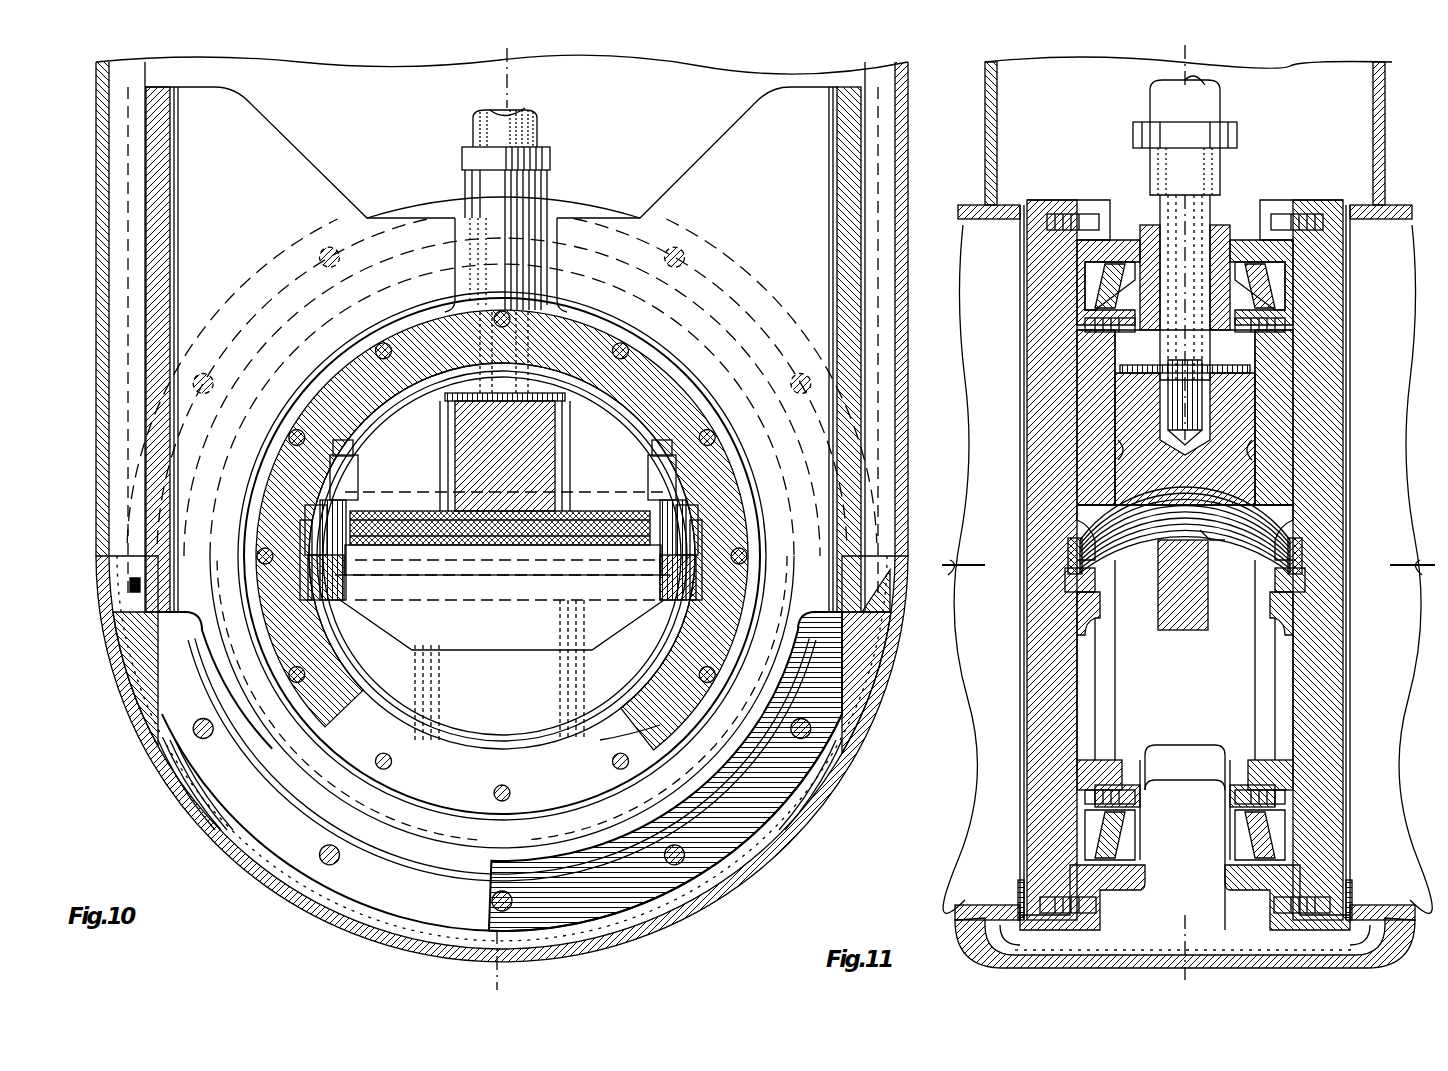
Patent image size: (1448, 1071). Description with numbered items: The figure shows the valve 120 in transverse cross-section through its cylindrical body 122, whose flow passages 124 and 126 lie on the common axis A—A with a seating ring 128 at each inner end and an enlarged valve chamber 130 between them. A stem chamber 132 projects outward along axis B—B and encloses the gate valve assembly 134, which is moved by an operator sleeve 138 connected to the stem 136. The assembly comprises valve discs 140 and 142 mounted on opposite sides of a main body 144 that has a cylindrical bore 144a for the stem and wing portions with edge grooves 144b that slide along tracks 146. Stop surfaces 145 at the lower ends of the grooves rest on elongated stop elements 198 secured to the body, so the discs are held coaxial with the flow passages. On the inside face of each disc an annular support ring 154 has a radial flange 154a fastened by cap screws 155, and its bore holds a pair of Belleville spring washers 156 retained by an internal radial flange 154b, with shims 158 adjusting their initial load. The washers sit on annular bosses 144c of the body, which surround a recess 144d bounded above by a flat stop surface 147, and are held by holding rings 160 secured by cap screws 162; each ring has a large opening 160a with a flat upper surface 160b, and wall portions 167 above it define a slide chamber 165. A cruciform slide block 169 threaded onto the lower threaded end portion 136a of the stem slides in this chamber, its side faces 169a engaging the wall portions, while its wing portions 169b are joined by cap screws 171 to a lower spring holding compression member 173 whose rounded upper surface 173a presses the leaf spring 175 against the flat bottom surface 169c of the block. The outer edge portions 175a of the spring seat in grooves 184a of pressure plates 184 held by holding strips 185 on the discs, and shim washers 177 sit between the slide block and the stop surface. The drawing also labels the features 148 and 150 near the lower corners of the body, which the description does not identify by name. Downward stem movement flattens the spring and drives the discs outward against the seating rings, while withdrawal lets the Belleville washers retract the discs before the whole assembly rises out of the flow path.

In FIG. 10, the valve 120 is at (218, 970).
In FIG. 11, the valve 120 is at (1432, 92).
In FIG. 10, the cylindrical body 122 is at (612, 942).
In FIG. 11, the cylindrical body 122 is at (1330, 965).
In FIG. 11, the flow passage 124 is at (975, 912).
In FIG. 11, the flow passage 126 is at (1370, 912).
In FIG. 11, the seating ring 128 is at (1000, 205).
In FIG. 10, the valve chamber 130 is at (432, 935).
In FIG. 11, the valve chamber 130 is at (1198, 940).
In FIG. 10, the stem chamber 132 is at (908, 75).
In FIG. 11, the stem chamber 132 is at (1372, 128).
In FIG. 10, the gate valve assembly 134 is at (645, 140).
In FIG. 11, the gate valve assembly 134 is at (1262, 120).
In FIG. 10, the stem 136 is at (540, 335).
In FIG. 11, the stem 136 is at (1212, 215).
In FIG. 11, the lower threaded end portion 136a is at (1210, 395).
In FIG. 10, the operator sleeve 138 is at (550, 140).
In FIG. 11, the operator sleeve 138 is at (1159, 135).
In FIG. 10, the valve disc 140 is at (447, 790).
In FIG. 11, the valve disc 140 is at (1027, 690).
In FIG. 11, the valve disc 142 is at (1343, 690).
In FIG. 10, the main body 144 is at (430, 215).
In FIG. 11, the main body 144 is at (1140, 228).
In FIG. 11, the cylindrical bore 144a is at (1155, 335).
In FIG. 10, the longitudinal edge groove 144b is at (170, 162).
In FIG. 10, the annular boss 144c is at (280, 692).
In FIG. 11, the annular boss 144c is at (1290, 345).
In FIG. 10, the recess 144d is at (624, 735).
In FIG. 11, the recess 144d is at (1232, 760).
In FIG. 10, the stop surface 145 is at (154, 724).
In FIG. 10, the track 146 is at (150, 72).
In FIG. 11, the track 146 is at (1249, 84).
In FIG. 10, the stop surface 147 is at (425, 345).
In FIG. 11, the stop surface 147 is at (1290, 365).
In FIG. 11, the rounded corner 148 is at (1012, 945).
In FIG. 11, the seal 150 is at (1022, 905).
In FIG. 10, the support ring 154 is at (758, 765).
In FIG. 11, the support ring 154 is at (1147, 880).
In FIG. 10, the radial flange 154a is at (810, 790).
In FIG. 11, the radial flange 154a is at (1060, 945).
In FIG. 10, the internal radial flange 154b is at (742, 845).
In FIG. 11, the internal radial flange 154b is at (1210, 845).
In FIG. 10, the cap screw 155 is at (318, 262).
In FIG. 11, the cap screw 155 is at (1100, 215).
In FIG. 10, the Belleville spring washer 156 is at (688, 832).
In FIG. 11, the Belleville spring washer 156 is at (1110, 842).
In FIG. 11, the shim 158 is at (1120, 268).
In FIG. 10, the holding ring 160 is at (438, 752).
In FIG. 11, the holding ring 160 is at (1080, 770).
In FIG. 10, the opening 160a is at (555, 758).
In FIG. 11, the opening 160a is at (1022, 750).
In FIG. 10, the flat upper surface 160b is at (415, 492).
In FIG. 11, the flat upper surface 160b is at (1085, 505).
In FIG. 10, the cap screw 162 is at (297, 436).
In FIG. 11, the cap screw 162 is at (1085, 325).
In FIG. 10, the slide chamber 165 is at (612, 418).
In FIG. 11, the slide chamber 165 is at (1240, 510).
In FIG. 10, the wall portion 167 is at (345, 410).
In FIG. 11, the wall portion 167 is at (1118, 455).
In FIG. 10, the slide block 169 is at (640, 372).
In FIG. 11, the slide block 169 is at (1105, 400).
In FIG. 11, the side face 169a is at (1115, 425).
In FIG. 10, the wing portion 169b is at (332, 480).
In FIG. 11, the wing portion 169b is at (1295, 438).
In FIG. 10, the flat bottom surface 169c is at (580, 508).
In FIG. 11, the flat bottom surface 169c is at (1085, 530).
In FIG. 10, the cap screw 171 is at (360, 462).
In FIG. 10, the lower spring holding compression member 173 is at (532, 653).
In FIG. 11, the lower spring holding compression member 173 is at (1198, 628).
In FIG. 10, the rounded upper surface 173a is at (520, 548).
In FIG. 11, the rounded upper surface 173a is at (1215, 545).
In FIG. 10, the leaf spring 175 is at (585, 562).
In FIG. 11, the leaf spring 175 is at (1148, 548).
In FIG. 11, the outer edge portion 175a is at (1080, 565).
In FIG. 10, the shim washer 177 is at (448, 396).
In FIG. 11, the shim washer 177 is at (1130, 372).
In FIG. 10, the pressure plate 184 is at (332, 535).
In FIG. 11, the pressure plate 184 is at (1080, 608).
In FIG. 10, the groove 184a is at (636, 562).
In FIG. 11, the groove 184a is at (1080, 585).
In FIG. 10, the holding strip 185 is at (410, 612).
In FIG. 11, the holding strip 185 is at (1080, 630).
In FIG. 10, the stop element 198 is at (112, 612).